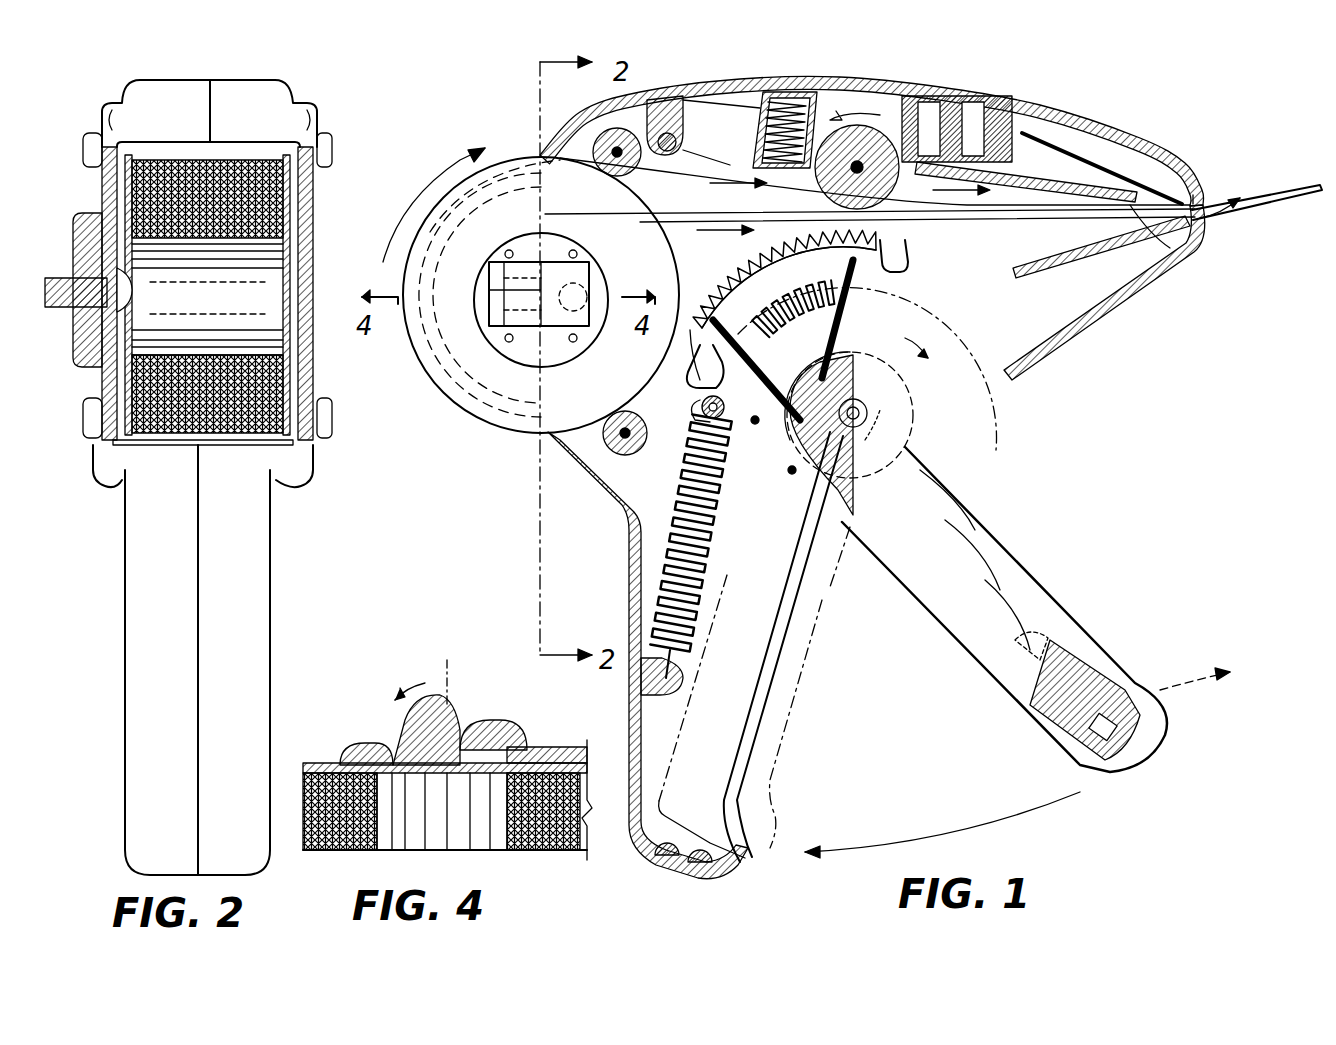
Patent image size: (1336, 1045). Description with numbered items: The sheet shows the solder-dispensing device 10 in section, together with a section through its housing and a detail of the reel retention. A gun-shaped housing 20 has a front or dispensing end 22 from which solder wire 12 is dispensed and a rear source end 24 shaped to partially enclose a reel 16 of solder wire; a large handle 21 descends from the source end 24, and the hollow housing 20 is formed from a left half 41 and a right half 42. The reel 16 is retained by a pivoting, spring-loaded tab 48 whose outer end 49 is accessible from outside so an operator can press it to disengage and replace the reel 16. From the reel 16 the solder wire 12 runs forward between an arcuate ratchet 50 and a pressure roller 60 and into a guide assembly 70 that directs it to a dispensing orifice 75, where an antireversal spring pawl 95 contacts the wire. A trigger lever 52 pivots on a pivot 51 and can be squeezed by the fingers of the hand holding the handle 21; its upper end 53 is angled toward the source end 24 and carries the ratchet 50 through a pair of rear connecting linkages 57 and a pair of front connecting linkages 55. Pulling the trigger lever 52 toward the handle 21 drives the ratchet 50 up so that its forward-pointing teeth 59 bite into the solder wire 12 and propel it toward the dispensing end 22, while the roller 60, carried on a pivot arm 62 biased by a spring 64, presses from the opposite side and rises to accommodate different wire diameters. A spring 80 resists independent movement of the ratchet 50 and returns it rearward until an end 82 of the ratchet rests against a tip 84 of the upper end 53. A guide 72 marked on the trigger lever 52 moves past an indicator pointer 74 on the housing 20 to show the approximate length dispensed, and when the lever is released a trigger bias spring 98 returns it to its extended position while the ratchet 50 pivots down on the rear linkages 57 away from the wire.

In FIG. 1, the solder-dispensing device 10 is at (1098, 98).
In FIG. 1, the solder wire 12 is at (1280, 186).
In FIG. 2, the reel 16 is at (207, 295).
In FIG. 4, the reel 16 is at (335, 762).
In FIG. 1, the reel 16 is at (462, 214).
In FIG. 1, the housing 20 is at (868, 128).
In FIG. 1, the handle 21 is at (775, 653).
In FIG. 1, the front or dispensing end 22 is at (1165, 270).
In FIG. 1, the rear source end 24 is at (590, 462).
In FIG. 2, the left half 41 is at (125, 517).
In FIG. 2, the right half 42 is at (271, 517).
In FIG. 2, the tab 48 is at (78, 333).
In FIG. 4, the tab 48 is at (505, 722).
In FIG. 2, the outer end of the tab 49 is at (48, 284).
In FIG. 4, the outer end of the tab 49 is at (445, 712).
In FIG. 1, the arcuate ratchet 50 is at (858, 297).
In FIG. 1, the pivot 51 is at (915, 420).
In FIG. 1, the trigger lever 52 is at (1038, 575).
In FIG. 1, the upper end of the trigger lever 53 is at (760, 428).
In FIG. 1, the front connecting linkages 55 is at (865, 332).
In FIG. 1, the rear connecting linkages 57 is at (690, 352).
In FIG. 1, the teeth 59 is at (715, 283).
In FIG. 1, the pressure roller 60 is at (935, 105).
In FIG. 1, the pivot arm 62 is at (700, 95).
In FIG. 1, the spring 64 is at (772, 98).
In FIG. 1, the guide assembly 70 is at (1185, 238).
In FIG. 1, the guide 72 is at (877, 450).
In FIG. 1, the indicator pointer 74 is at (850, 530).
In FIG. 1, the dispensing orifice 75 is at (1202, 200).
In FIG. 1, the spring 80 is at (770, 336).
In FIG. 1, the end of the ratchet 82 is at (690, 382).
In FIG. 1, the tip of the upper end 84 is at (690, 440).
In FIG. 1, the antireversal spring pawl 95 is at (1130, 150).
In FIG. 1, the trigger bias spring 98 is at (705, 570).